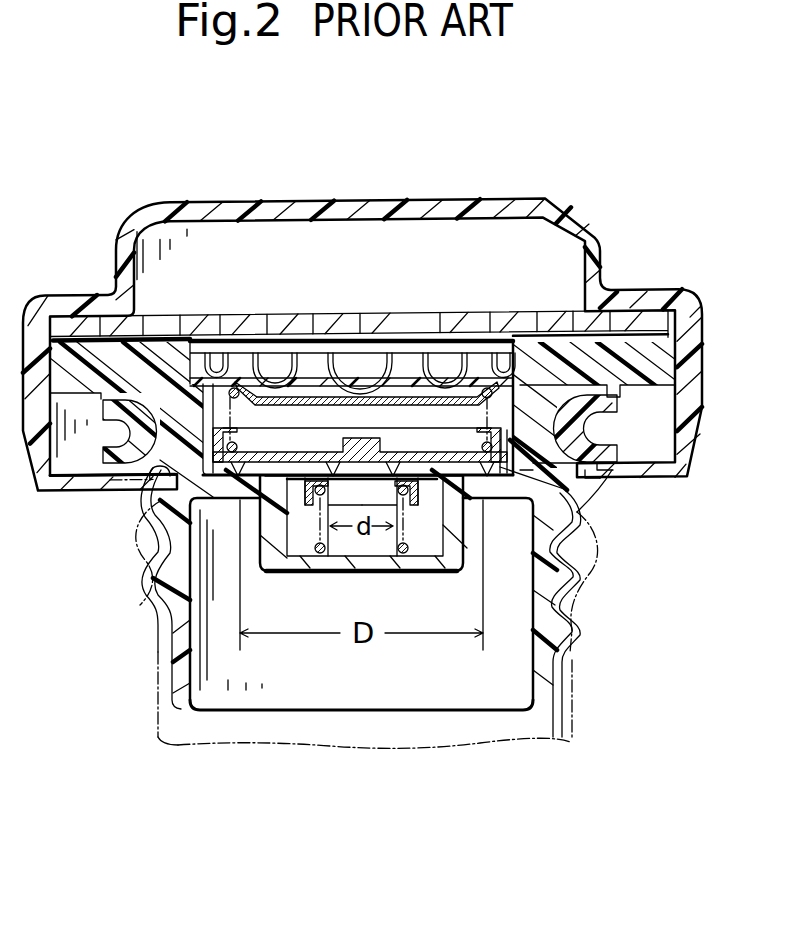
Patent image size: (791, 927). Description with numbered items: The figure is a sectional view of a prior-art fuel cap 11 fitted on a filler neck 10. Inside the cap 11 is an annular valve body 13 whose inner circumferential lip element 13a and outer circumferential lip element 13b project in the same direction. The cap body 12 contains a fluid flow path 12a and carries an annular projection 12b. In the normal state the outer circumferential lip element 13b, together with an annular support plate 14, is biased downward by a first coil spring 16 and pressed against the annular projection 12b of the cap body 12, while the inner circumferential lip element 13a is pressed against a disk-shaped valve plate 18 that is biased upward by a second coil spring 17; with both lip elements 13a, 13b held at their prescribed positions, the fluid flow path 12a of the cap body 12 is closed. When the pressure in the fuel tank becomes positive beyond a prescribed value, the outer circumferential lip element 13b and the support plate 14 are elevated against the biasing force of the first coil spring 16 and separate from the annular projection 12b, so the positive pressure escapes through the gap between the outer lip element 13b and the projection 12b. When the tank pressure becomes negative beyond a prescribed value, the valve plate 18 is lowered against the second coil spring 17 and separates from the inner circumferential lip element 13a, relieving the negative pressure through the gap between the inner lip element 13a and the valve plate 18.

The filler neck 10 is at (592, 550).
The cap 11 is at (490, 162).
The cap body 12 is at (547, 693).
The fluid flow path 12a is at (371, 683).
The annular projection 12b is at (515, 485).
The annular valve body 13 is at (195, 500).
The inner circumferential lip element 13a is at (323, 452).
The outer circumferential lip element 13b is at (574, 504).
The annular support plate 14 is at (420, 397).
The first coil spring 16 is at (236, 388).
The second coil spring 17 is at (317, 552).
The valve plate 18 is at (413, 487).